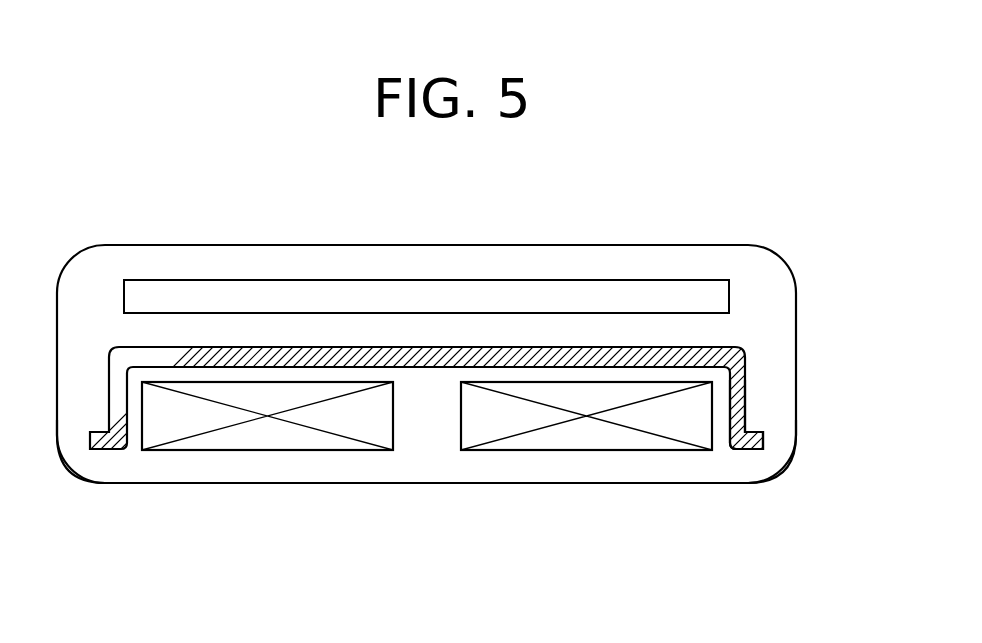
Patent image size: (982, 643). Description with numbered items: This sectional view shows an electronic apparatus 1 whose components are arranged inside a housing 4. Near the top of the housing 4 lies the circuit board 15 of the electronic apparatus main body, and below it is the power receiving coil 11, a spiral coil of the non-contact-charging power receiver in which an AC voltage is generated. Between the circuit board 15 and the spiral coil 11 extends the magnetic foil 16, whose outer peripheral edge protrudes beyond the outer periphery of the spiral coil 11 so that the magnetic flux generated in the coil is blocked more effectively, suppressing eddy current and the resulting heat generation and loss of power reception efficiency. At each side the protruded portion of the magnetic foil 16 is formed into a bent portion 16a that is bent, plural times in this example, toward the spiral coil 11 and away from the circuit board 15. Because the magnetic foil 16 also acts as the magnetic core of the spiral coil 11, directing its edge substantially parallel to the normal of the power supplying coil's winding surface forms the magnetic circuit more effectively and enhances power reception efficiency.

The electronic apparatus 1 is at (760, 210).
The housing 4 is at (660, 483).
The power receiving coil 11 is at (493, 450).
The circuit board 15 is at (630, 280).
The magnetic foil 16 is at (745, 352).
The bent portion 16a is at (745, 412).